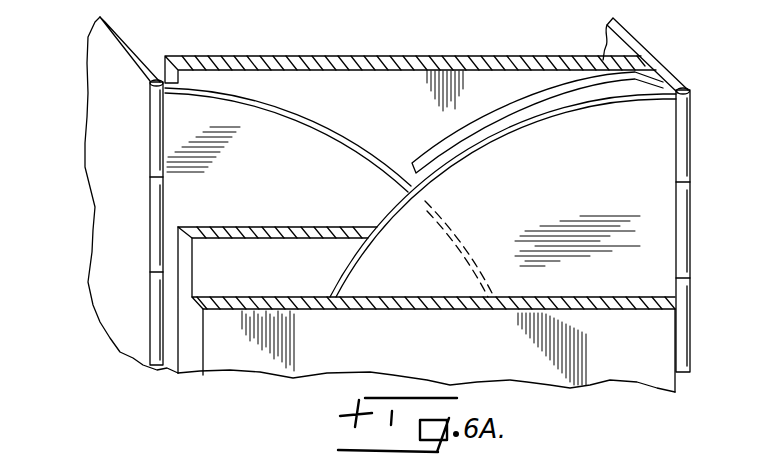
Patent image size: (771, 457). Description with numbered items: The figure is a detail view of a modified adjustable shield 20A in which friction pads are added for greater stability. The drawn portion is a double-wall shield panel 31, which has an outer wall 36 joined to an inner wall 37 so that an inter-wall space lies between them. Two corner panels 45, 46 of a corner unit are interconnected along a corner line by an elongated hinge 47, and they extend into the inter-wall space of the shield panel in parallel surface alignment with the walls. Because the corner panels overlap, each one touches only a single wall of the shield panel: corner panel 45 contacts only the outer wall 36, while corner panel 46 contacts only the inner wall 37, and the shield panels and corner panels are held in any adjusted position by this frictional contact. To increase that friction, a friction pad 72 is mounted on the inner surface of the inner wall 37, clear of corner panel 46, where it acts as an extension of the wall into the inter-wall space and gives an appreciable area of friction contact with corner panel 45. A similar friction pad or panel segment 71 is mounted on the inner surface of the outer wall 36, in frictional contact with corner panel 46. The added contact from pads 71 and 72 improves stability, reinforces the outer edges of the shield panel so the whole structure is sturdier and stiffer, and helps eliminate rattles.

The shield 20A is at (300, 402).
The shield panel 31 is at (558, 378).
The outer wall 36 is at (610, 377).
The inner wall 37 is at (423, 33).
The corner panel 45 is at (315, 143).
The corner panel 46 is at (102, 176).
The elongated hinge 47 is at (152, 343).
The friction pad 71 is at (326, 256).
The friction pad 72 is at (550, 97).